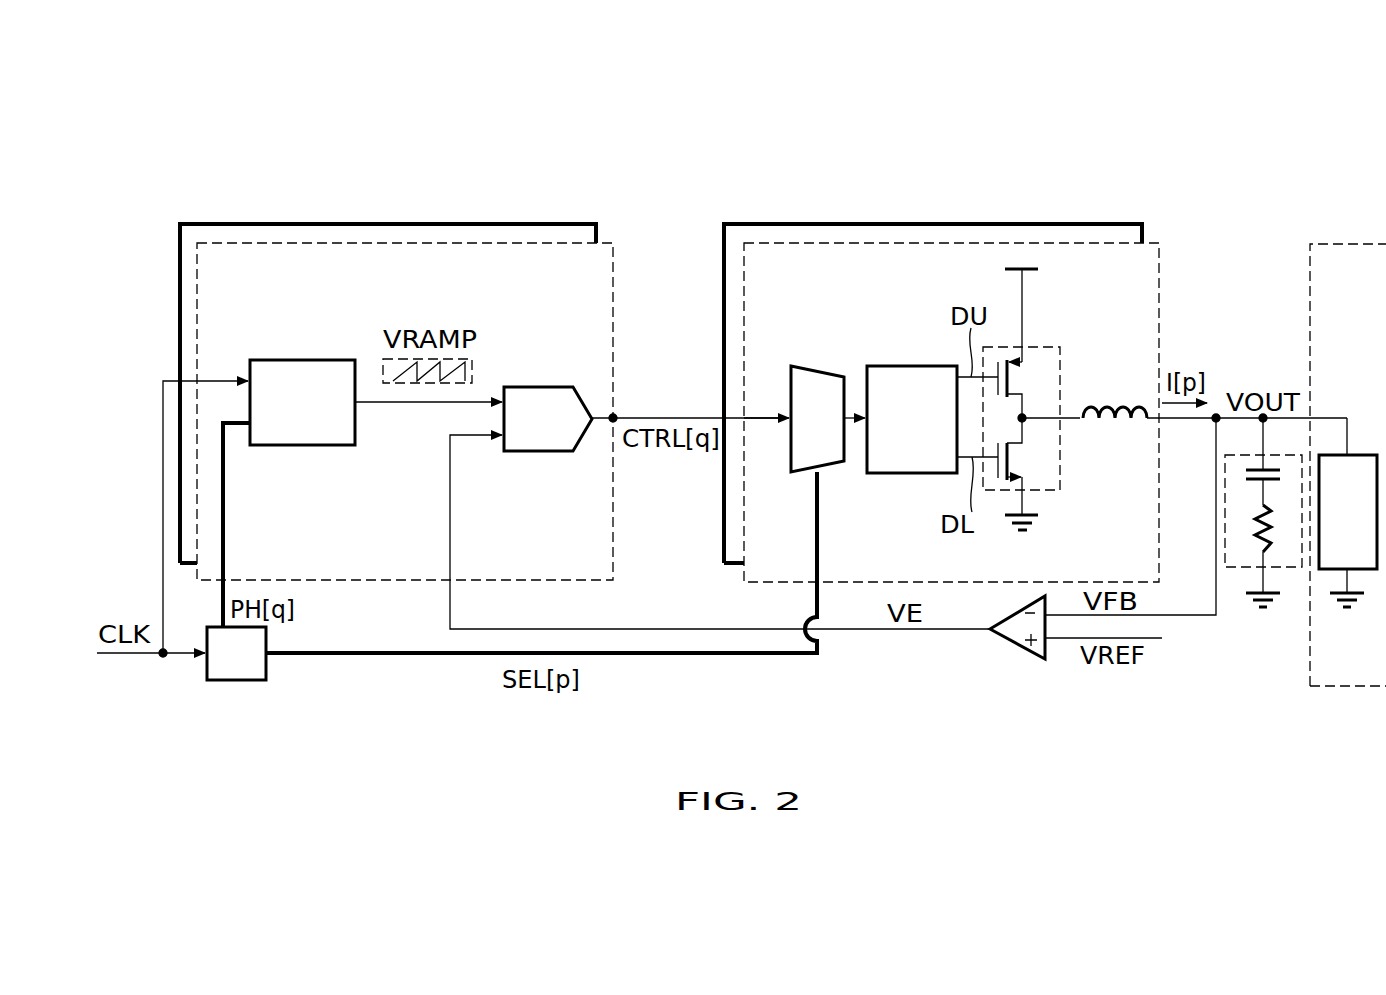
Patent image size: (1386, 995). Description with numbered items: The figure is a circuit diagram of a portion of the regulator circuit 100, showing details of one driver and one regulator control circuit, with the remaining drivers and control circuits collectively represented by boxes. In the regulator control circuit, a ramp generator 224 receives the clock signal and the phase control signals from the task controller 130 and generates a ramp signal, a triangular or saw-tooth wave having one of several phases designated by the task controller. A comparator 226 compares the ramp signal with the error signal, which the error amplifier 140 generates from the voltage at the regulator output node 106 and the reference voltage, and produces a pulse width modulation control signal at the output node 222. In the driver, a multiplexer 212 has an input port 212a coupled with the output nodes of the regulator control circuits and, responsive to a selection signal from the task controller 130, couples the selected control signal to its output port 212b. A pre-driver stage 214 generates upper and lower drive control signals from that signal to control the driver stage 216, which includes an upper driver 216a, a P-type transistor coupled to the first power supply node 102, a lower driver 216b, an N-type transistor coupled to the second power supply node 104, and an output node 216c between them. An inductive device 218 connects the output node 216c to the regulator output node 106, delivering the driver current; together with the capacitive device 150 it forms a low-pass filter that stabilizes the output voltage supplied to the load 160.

The regulator circuit 100 is at (1295, 139).
The first power supply node 102 is at (1031, 271).
The second power supply node 104 is at (1010, 516).
The regulator output node 106 is at (1217, 416).
The task controller 130 is at (255, 666).
The error amplifier 140 is at (1013, 645).
The capacitive device 150 is at (1236, 567).
The load 160 is at (1367, 522).
The multiplexer 212 is at (837, 430).
The input port 212a is at (763, 417).
The output port 212b is at (850, 417).
The pre-driver stage 214 is at (931, 430).
The driver stage 216 is at (1065, 456).
The upper driver 216a is at (1023, 377).
The lower driver 216b is at (1022, 458).
The output node of driver stage 216c is at (1024, 417).
The inductive device 218 is at (1123, 428).
The output node of regulator control circuit 222 is at (614, 416).
The ramp generator 224 is at (321, 416).
The comparator 226 is at (558, 430).